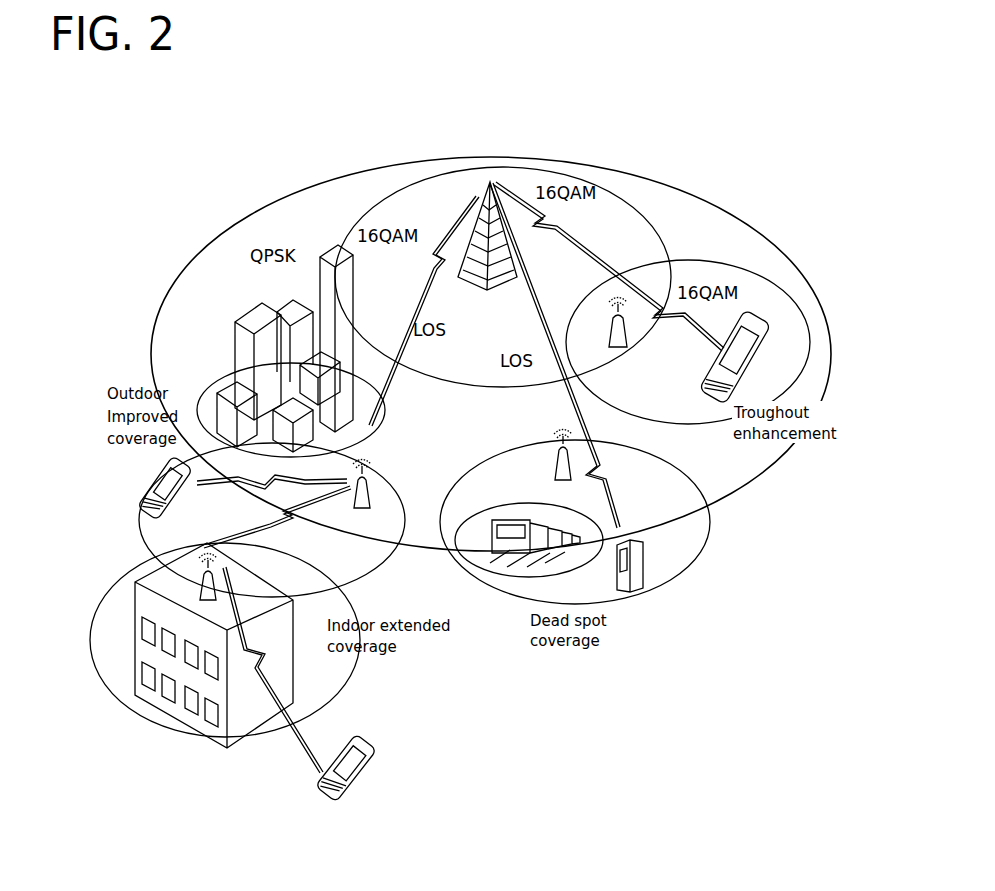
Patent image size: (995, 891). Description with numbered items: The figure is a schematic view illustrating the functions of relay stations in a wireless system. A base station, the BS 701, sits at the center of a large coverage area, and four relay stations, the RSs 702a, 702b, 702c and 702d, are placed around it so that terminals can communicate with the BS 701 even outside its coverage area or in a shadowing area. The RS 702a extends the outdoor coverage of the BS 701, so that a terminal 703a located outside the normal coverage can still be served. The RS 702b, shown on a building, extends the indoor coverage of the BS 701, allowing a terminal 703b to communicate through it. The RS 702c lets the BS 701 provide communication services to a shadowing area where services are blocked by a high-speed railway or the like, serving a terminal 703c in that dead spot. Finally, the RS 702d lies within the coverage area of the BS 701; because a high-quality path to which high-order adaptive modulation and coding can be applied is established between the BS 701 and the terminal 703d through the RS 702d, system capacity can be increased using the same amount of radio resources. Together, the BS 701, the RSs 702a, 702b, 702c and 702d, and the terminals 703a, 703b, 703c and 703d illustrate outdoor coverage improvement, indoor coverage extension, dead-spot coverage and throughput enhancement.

The BS 701 is at (446, 225).
The RS 702a is at (370, 493).
The RS 702b is at (200, 572).
The RS 702c is at (557, 467).
The RS 702d is at (630, 338).
The terminal 703a is at (150, 497).
The terminal 703b is at (347, 787).
The terminal 703c is at (637, 567).
The terminal 703d is at (757, 320).